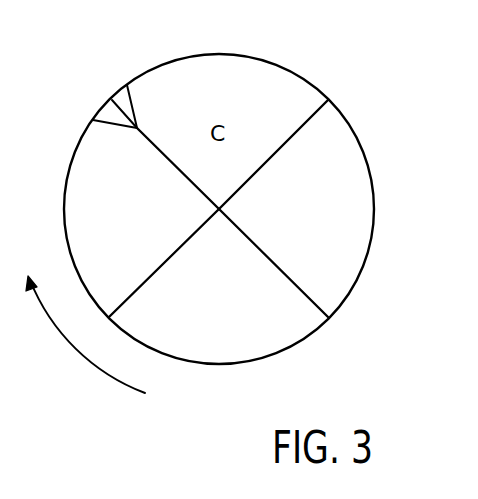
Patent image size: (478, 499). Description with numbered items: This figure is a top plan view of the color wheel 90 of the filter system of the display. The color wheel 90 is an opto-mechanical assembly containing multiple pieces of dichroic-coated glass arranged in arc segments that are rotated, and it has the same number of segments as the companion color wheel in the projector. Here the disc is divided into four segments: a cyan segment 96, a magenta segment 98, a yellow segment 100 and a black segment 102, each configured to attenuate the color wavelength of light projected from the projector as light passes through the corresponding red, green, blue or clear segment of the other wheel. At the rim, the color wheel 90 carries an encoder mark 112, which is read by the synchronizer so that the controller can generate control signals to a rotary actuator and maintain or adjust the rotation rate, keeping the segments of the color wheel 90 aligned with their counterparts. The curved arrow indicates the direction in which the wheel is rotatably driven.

The color wheel 90 is at (66, 86).
The cyan segment 96 is at (245, 55).
The magenta segment 98 is at (376, 206).
The yellow segment 100 is at (220, 366).
The black segment 102 is at (61, 205).
The encoder mark 112 is at (133, 103).